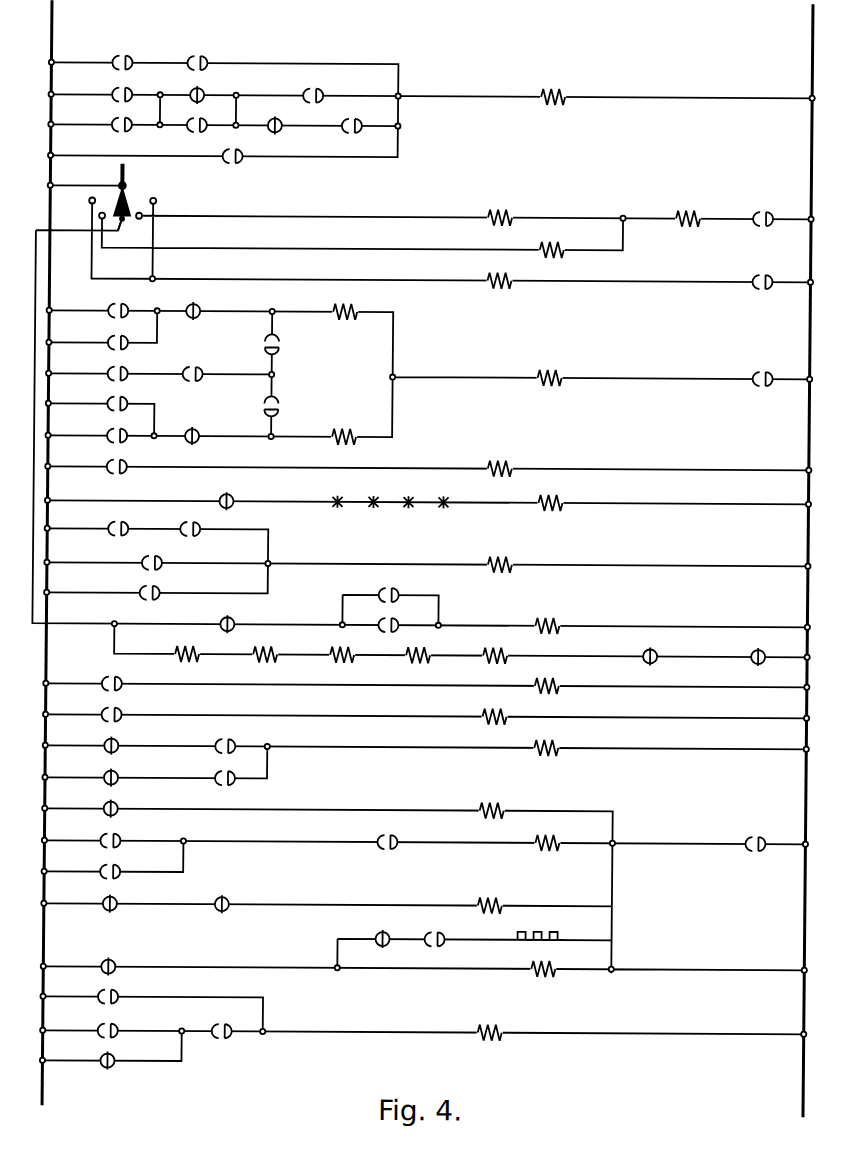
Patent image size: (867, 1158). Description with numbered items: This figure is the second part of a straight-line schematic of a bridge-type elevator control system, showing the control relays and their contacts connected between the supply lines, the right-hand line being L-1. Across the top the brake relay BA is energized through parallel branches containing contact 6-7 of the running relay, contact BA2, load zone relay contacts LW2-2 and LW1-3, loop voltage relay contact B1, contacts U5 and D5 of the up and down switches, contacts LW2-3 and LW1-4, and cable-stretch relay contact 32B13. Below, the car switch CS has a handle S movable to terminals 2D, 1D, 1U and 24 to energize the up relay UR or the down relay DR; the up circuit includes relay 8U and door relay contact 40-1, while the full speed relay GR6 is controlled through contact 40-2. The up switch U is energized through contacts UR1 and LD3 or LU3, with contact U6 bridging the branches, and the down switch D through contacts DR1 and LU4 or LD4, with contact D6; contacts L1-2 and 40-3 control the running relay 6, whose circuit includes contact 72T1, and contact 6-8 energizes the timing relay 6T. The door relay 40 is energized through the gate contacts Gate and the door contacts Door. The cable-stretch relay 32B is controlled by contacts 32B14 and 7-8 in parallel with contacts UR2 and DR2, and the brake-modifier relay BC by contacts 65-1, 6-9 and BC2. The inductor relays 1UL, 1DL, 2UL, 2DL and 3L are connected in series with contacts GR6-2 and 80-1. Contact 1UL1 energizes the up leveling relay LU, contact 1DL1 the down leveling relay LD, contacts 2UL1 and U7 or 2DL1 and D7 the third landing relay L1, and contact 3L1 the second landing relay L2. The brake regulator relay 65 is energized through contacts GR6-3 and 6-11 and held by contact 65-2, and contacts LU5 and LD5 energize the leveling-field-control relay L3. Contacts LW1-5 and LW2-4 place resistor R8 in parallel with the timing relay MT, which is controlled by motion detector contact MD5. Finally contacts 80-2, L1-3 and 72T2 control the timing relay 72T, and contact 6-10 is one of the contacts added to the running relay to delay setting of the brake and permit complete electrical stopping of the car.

The negative supply line L-1 is at (811, 16).
The relay 6 contact 6-7 is at (118, 55).
The relay BA contact BA2 is at (204, 56).
The limit switch LW2 contact LW2-2 is at (116, 90).
The limit switch LW1 contact LW1-3 is at (202, 88).
The relay B contact B1 is at (322, 90).
The up relay contact U5 is at (116, 121).
The down relay contact D5 is at (202, 120).
The limit switch LW2 contact LW2-3 is at (358, 116).
The limit switch LW1 contact LW1-4 is at (280, 132).
The relay 32B contact 32B13 is at (241, 163).
The brake relay BA is at (560, 90).
The car switch CS is at (127, 170).
The car switch terminal 2D is at (90, 201).
The car switch terminal 1D is at (101, 216).
The car switch terminal 1U is at (141, 212).
The car switch terminal 24 is at (158, 201).
The switch handle S is at (126, 224).
The up relay UR is at (505, 212).
The relay 8U coil 8U is at (690, 212).
The relay 40 contact 40-1 is at (765, 212).
The down relay DR is at (561, 244).
The full speed relay GR6 is at (496, 277).
The relay 40 contact 40-2 is at (765, 275).
The up run relay contact UR1 is at (114, 308).
The relay LD contact LD3 is at (200, 306).
The up switch U is at (354, 305).
The relay LU contact LU3 is at (114, 340).
The up relay contact U6 is at (284, 343).
The relay L1 contact L1-2 is at (114, 371).
The relay 40 contact 40-3 is at (201, 368).
The running relay 6 is at (556, 370).
The timer 72T contact 72T1 is at (764, 370).
The relay LD contact LD4 is at (114, 400).
The down relay contact D6 is at (284, 405).
The down run relay contact DR1 is at (114, 432).
The relay LU contact LU4 is at (200, 431).
The down switch D is at (351, 428).
The relay 6 contact 6-8 is at (114, 463).
The timing relay 6T is at (507, 463).
The gate contacts Gate is at (228, 495).
The door contacts Door is at (385, 515).
The door relay 40 is at (559, 497).
The relay 32B contact 32B14 is at (116, 525).
The relay 7 contact 7-8 is at (201, 526).
The up run relay contact UR2 is at (162, 558).
The cable-stretch relay 32B is at (508, 559).
The down run relay contact DR2 is at (163, 588).
The relay BC contact BC2 is at (399, 588).
The relay 65 contact 65-1 is at (236, 619).
The relay 6 contact 6-9 is at (386, 622).
The brake-modifier relay BC is at (553, 620).
The first up landing coil 1UL is at (188, 649).
The inductor relay 1DL is at (265, 648).
The inductor relay 2UL is at (340, 650).
The second down landing coil 2DL is at (412, 661).
The inductor relay 3L is at (494, 650).
The relay GR6 contact GR6-2 is at (652, 652).
The relay 80 contact 80-1 is at (760, 652).
The relay 1UL contact 1UL1 is at (110, 680).
The up leveling relay LU is at (559, 682).
The relay 1DL contact 1DL1 is at (110, 711).
The down leveling relay LD is at (494, 712).
The relay 2UL contact 2UL1 is at (110, 742).
The up relay contact U7 is at (232, 741).
The third landing relay L1 is at (557, 745).
The relay 2DL contact 2DL1 is at (110, 774).
The down relay contact D7 is at (233, 774).
The relay 3L contact 3L1 is at (110, 805).
The second landing relay L2 is at (499, 807).
The relay GR6 contact GR6-3 is at (121, 837).
The relay 6 contact 6-11 is at (387, 837).
The brake regulator relay 65 is at (555, 838).
The relay 65 contact 65-2 is at (119, 868).
The relay LU contact LU5 is at (120, 900).
The relay LD contact LD5 is at (229, 900).
The leveling-field-control relay L3 is at (491, 902).
The limit switch LW1 contact LW1-5 is at (385, 935).
The limit switch LW2 contact LW2-4 is at (444, 946).
The resistor R8 is at (570, 930).
The relay MD contact MD5 is at (120, 963).
The timing relay MT is at (555, 966).
The relay 80 contact 80-2 is at (120, 994).
The relay L1 contact L1-3 is at (120, 1027).
The timer 72T contact 72T2 is at (236, 1038).
The timing relay 72T is at (503, 1030).
The relay 6 contact 6-10 is at (120, 1058).